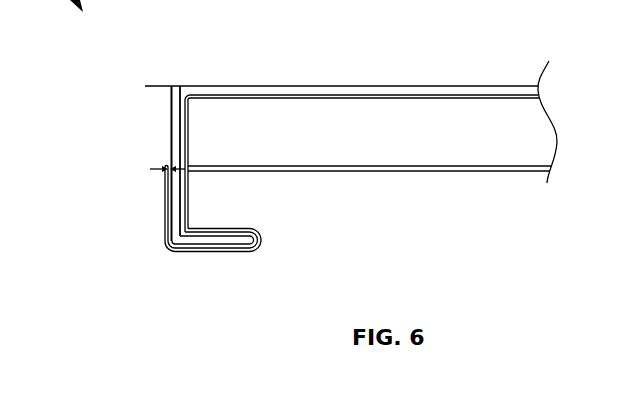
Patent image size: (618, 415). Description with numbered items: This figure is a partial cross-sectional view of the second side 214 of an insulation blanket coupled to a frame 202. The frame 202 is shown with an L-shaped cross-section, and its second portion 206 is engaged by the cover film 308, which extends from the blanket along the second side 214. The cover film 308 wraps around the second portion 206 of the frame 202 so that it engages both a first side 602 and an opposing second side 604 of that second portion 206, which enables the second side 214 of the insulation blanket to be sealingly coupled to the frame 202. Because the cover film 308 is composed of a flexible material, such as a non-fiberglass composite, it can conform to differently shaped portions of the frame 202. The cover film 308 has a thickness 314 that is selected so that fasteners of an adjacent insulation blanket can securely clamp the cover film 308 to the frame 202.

The second side 214 is at (159, 74).
The frame 202 is at (185, 73).
The second side 604 is at (182, 218).
The thickness 314 is at (152, 170).
The first side 602 is at (167, 229).
The second portion 206 is at (185, 249).
The cover film 308 is at (225, 252).